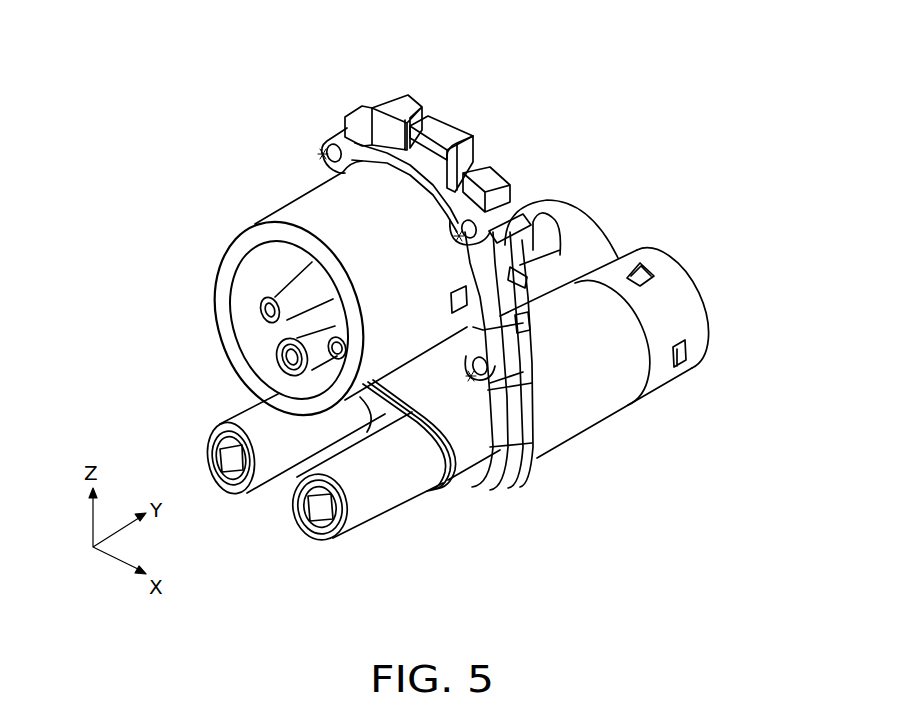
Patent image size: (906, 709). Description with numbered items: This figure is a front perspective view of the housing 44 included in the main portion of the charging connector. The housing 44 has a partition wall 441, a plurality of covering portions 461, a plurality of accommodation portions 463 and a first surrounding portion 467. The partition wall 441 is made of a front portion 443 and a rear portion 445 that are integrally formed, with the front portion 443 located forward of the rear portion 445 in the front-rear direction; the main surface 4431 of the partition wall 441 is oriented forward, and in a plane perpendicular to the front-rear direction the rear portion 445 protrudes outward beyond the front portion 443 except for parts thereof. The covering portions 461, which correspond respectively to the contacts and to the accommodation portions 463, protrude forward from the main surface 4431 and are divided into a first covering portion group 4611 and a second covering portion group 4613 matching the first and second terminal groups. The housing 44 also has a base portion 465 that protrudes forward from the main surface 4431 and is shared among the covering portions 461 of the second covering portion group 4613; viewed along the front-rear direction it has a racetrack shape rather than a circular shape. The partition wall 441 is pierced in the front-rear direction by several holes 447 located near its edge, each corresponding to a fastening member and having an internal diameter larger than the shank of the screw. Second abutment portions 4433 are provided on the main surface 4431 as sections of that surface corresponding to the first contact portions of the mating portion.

The housing 44 is at (446, 60).
The partition wall 441 is at (462, 194).
The front portion 443 is at (467, 130).
The main surface 4431 is at (352, 147).
The second abutment portion 4433 is at (323, 138).
The rear portion 445 is at (522, 412).
The hole 447 is at (320, 154).
The covering portion 461 is at (309, 442).
The first covering portion group 4611 is at (300, 373).
The second covering portion group 4613 is at (397, 553).
The accommodation portion 463 is at (568, 258).
The base portion 465 is at (465, 457).
The first surrounding portion 467 is at (322, 217).